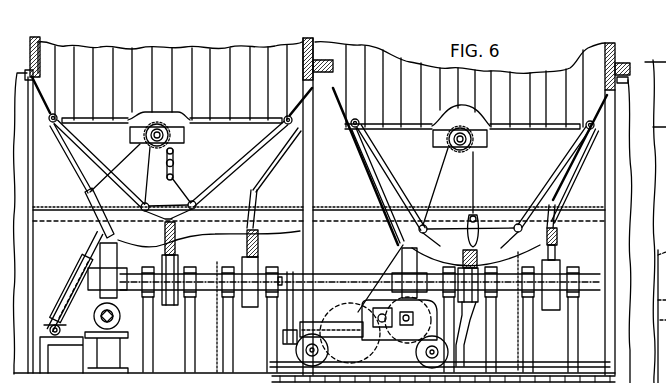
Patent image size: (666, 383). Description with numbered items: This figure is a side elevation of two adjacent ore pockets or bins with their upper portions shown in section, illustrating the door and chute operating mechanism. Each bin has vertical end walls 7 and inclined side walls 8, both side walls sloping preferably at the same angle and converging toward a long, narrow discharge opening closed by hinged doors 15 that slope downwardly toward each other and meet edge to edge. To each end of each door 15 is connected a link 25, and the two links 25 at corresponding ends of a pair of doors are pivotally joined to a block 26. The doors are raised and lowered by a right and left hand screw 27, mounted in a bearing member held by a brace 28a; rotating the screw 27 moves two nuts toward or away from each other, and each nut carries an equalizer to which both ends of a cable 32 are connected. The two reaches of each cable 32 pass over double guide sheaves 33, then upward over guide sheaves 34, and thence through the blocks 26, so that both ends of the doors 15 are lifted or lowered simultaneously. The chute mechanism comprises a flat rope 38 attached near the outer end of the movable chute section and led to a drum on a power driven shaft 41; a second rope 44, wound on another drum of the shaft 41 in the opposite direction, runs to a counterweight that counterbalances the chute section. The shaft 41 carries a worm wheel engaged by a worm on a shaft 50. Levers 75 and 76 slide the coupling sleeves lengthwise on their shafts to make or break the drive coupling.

The end wall 7 is at (304, 66).
The side wall 8 is at (321, 85).
The door 15 is at (101, 160).
The link 25 is at (149, 198).
The block 26 is at (175, 164).
The right and left hand screw 27 is at (50, 325).
The brace 28a is at (70, 283).
The cable 32 is at (90, 250).
The double guide sheave 33 is at (60, 302).
The guide sheave 34 is at (158, 123).
The cable or rope 38 is at (164, 253).
The power driven shaft 41 is at (201, 282).
The cable or rope 44 is at (259, 240).
The shaft 50 is at (120, 316).
The lever 75 is at (287, 273).
The lever 76 is at (294, 278).